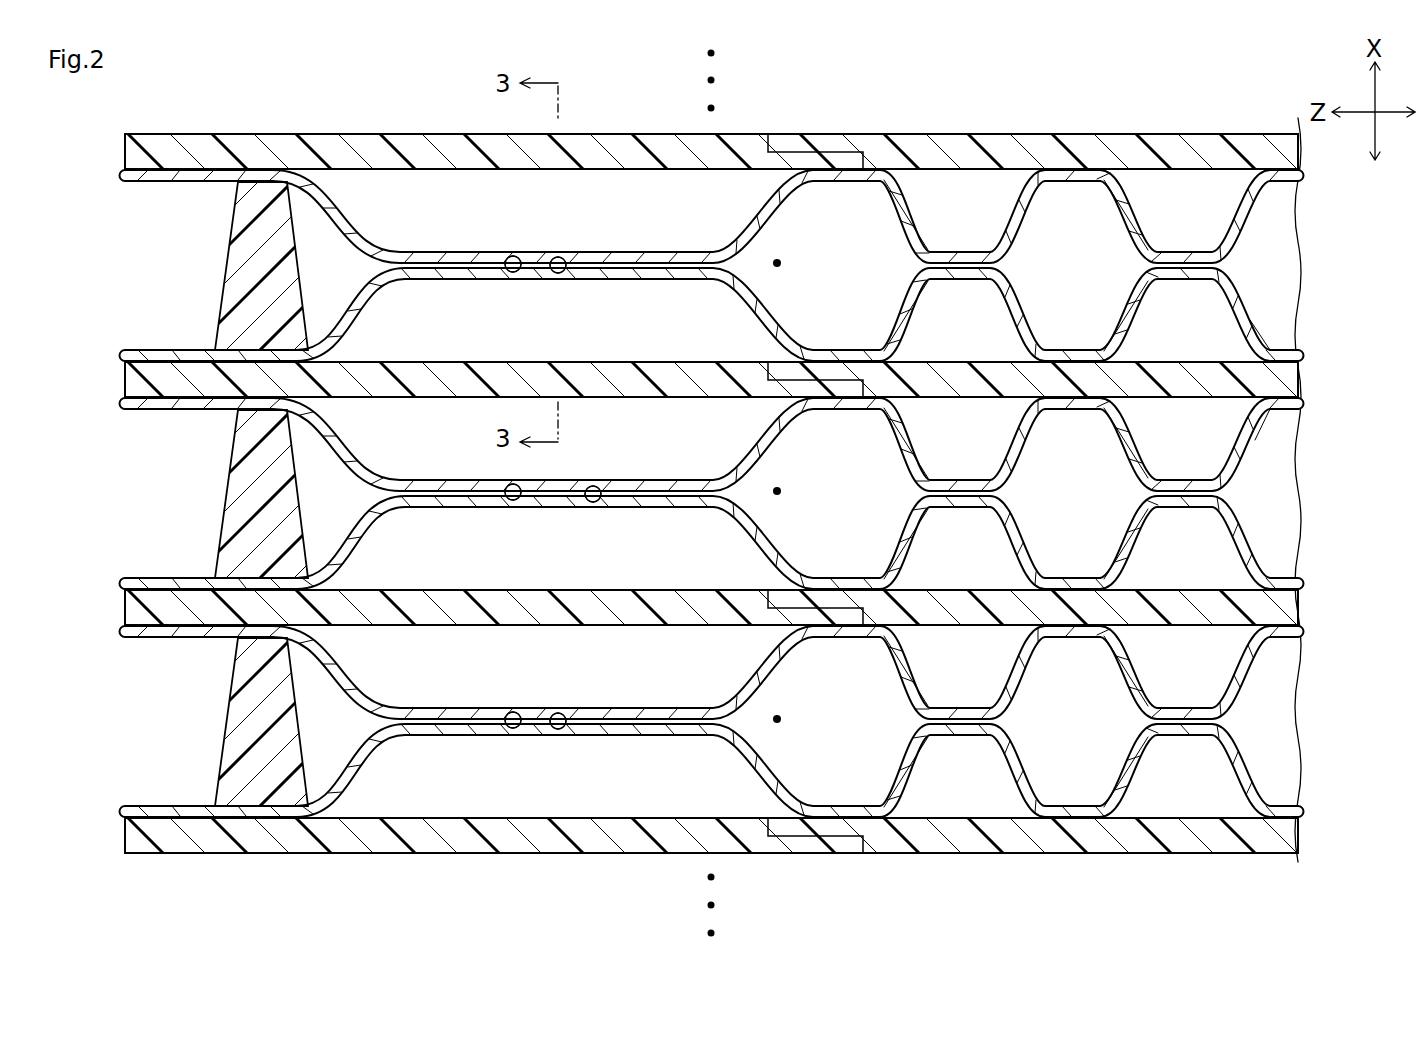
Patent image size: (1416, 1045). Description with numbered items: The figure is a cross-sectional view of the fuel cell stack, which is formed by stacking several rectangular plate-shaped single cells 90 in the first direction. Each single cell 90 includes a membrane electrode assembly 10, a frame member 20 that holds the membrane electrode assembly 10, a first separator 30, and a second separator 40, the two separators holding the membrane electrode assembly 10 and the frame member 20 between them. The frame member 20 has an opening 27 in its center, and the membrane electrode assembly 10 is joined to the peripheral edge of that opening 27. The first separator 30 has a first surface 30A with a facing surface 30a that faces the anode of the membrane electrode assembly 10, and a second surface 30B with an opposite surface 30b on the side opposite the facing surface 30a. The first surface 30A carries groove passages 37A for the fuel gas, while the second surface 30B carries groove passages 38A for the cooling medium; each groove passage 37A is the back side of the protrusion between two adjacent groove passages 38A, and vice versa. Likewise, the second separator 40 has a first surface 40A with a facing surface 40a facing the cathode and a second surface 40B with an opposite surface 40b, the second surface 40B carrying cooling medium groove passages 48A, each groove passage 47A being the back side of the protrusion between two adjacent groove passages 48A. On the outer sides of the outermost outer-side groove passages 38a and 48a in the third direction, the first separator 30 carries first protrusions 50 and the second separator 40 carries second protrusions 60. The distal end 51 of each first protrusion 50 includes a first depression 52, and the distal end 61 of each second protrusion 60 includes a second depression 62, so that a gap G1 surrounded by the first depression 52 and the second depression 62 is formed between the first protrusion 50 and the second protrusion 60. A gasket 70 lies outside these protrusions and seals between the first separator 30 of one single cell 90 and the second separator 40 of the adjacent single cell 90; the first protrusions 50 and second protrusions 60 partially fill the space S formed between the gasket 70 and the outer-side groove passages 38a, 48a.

The membrane electrode assembly 10 is at (1300, 172).
The frame member 20 is at (125, 142).
The opening 27 is at (871, 134).
The first separator 30 is at (1300, 198).
The first surface 30A is at (125, 412).
The second surface 30B is at (160, 410).
The facing surface 30a is at (1280, 410).
The opposite surface 30b is at (1283, 425).
The groove passages 37A is at (928, 216).
The groove passages 38A is at (1247, 212).
The outer-side groove passages 38a is at (1020, 226).
The second separator 40 is at (1300, 355).
The first surface 40A is at (125, 356).
The second surface 40B is at (152, 349).
The facing surface 40a is at (1300, 353).
The opposite surface 40b is at (1300, 322).
The groove passages 47A is at (928, 314).
The groove passages 48A is at (1245, 320).
The outer-side groove passages 48a is at (1020, 316).
The first protrusions 50 is at (789, 222).
The distal end 51 is at (575, 493).
The first depression 52 is at (561, 259).
The second protrusions 60 is at (790, 311).
The distal end 61 is at (513, 492).
The second depression 62 is at (514, 272).
The gasket 70 is at (228, 278).
The single cell 90 is at (1373, 348).
The gap G1 is at (465, 268).
The space S is at (782, 263).